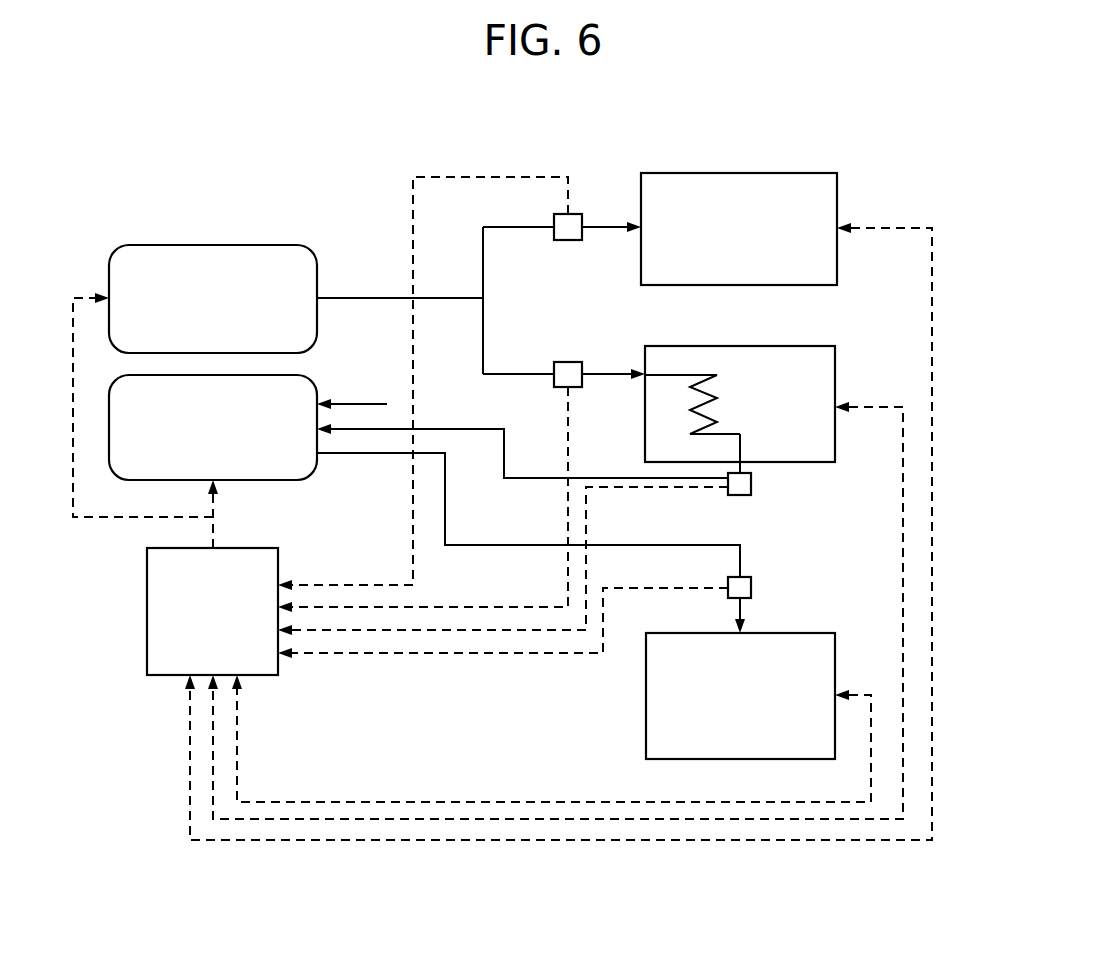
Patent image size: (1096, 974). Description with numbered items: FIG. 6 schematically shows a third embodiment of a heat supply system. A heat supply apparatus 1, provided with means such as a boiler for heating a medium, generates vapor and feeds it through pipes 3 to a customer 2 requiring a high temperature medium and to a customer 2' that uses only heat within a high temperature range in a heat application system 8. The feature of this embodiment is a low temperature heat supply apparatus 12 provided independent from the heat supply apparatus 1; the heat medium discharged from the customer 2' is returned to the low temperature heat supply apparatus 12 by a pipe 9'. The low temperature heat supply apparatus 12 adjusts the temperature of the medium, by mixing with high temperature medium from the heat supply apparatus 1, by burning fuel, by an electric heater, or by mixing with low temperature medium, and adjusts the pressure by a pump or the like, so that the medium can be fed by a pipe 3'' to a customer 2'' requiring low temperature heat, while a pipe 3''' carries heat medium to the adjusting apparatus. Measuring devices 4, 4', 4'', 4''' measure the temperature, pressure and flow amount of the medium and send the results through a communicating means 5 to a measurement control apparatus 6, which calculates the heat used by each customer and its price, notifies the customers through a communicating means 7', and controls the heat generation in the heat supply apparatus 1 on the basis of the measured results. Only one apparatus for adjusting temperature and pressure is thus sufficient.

The heat supply apparatus 1 is at (178, 245).
The low temperature heat supply apparatus 12 is at (278, 481).
The measurement control apparatus 6 is at (175, 678).
The customer 2 is at (739, 195).
The customer 2' is at (771, 403).
The customer 2'' is at (704, 696).
The heat application system 8 is at (712, 399).
The pipes 3 is at (481, 300).
The pipe 3'' is at (711, 559).
The pipe 3''' is at (458, 499).
The pipe 9' is at (528, 450).
The measuring device 4 is at (568, 256).
The measuring device 4' is at (575, 350).
The measuring device 4'' is at (774, 485).
The measuring device 4''' is at (778, 604).
The communicating means 5 is at (352, 585).
The communicating means 7' is at (558, 578).